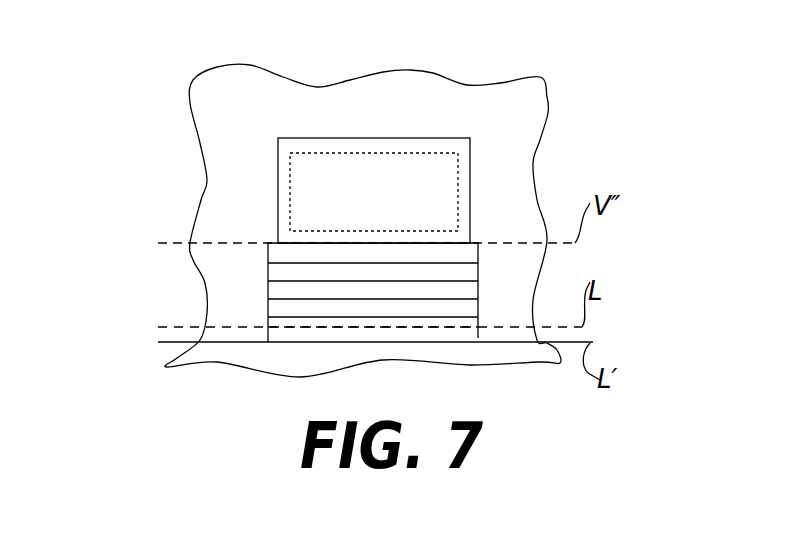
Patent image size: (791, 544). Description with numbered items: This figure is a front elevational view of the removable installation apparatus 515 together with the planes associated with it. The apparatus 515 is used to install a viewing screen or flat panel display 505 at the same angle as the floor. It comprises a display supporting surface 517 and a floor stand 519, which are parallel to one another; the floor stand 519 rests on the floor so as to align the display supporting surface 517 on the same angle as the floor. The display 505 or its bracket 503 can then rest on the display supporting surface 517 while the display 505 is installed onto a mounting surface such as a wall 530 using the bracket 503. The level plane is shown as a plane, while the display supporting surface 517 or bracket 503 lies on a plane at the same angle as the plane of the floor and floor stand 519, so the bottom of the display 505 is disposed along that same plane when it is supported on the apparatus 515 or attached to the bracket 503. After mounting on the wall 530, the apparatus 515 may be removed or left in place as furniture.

The bracket 503 is at (472, 173).
The flat panel display 505 is at (470, 138).
The removable installation apparatus 515 is at (277, 288).
The display supporting surface 517 is at (478, 243).
The floor stand 519 is at (490, 337).
The wall 530 is at (222, 150).